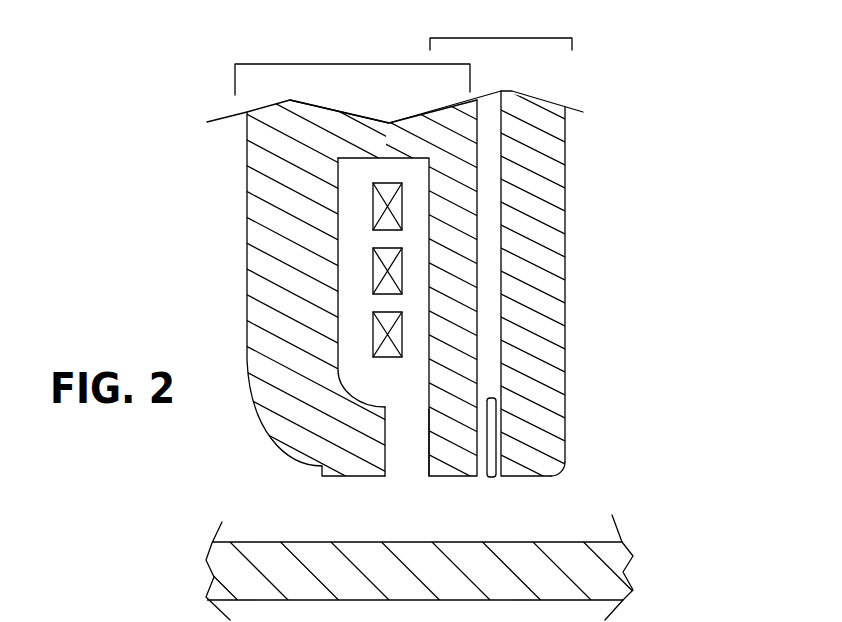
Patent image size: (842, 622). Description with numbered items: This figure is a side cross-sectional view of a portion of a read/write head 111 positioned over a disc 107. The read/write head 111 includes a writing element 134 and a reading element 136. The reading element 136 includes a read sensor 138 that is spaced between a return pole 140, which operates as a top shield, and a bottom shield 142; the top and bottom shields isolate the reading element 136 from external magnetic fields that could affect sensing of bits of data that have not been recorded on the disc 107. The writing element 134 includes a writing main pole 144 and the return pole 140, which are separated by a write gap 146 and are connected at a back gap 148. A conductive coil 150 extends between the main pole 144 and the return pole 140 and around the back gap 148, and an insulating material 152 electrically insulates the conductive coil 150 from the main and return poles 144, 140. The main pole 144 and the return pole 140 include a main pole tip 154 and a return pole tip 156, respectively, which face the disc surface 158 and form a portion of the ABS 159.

The disc 107 is at (404, 543).
The read/write head 111 is at (448, 311).
The writing element 134 is at (352, 64).
The reading element 136 is at (501, 29).
The read sensor 138 is at (492, 478).
The return pole 140 is at (447, 340).
The bottom shield 142 is at (556, 302).
The writing main pole 144 is at (258, 295).
The write gap 146 is at (408, 445).
The back gap 148 is at (385, 130).
The conductive coil 150 is at (373, 210).
The insulating material 152 is at (373, 270).
The main pole tip 154 is at (333, 478).
The return pole tip 156 is at (443, 478).
The disc surface 158 is at (555, 540).
The ABS 159 is at (565, 478).